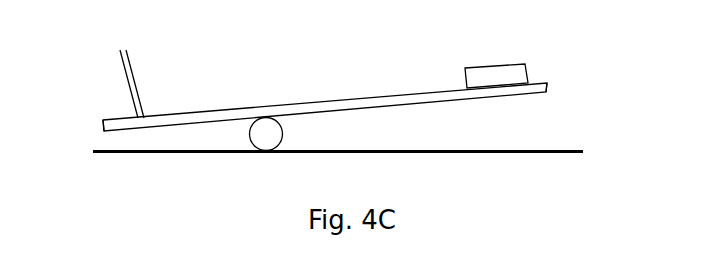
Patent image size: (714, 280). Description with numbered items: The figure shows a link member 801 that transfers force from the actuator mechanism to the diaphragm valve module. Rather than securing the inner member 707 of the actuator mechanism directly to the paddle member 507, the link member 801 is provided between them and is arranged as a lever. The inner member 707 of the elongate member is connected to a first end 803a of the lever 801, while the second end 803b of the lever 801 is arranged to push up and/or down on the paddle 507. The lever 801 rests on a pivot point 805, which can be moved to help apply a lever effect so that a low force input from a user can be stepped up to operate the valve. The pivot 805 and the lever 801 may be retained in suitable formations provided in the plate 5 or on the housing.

The plate 5 is at (473, 150).
The link member 801 is at (413, 94).
The first end of the lever 803a is at (106, 123).
The second end of the lever 803b is at (548, 85).
The pivot point 805 is at (265, 127).
The inner member 707 is at (130, 62).
The paddle member 507 is at (503, 66).